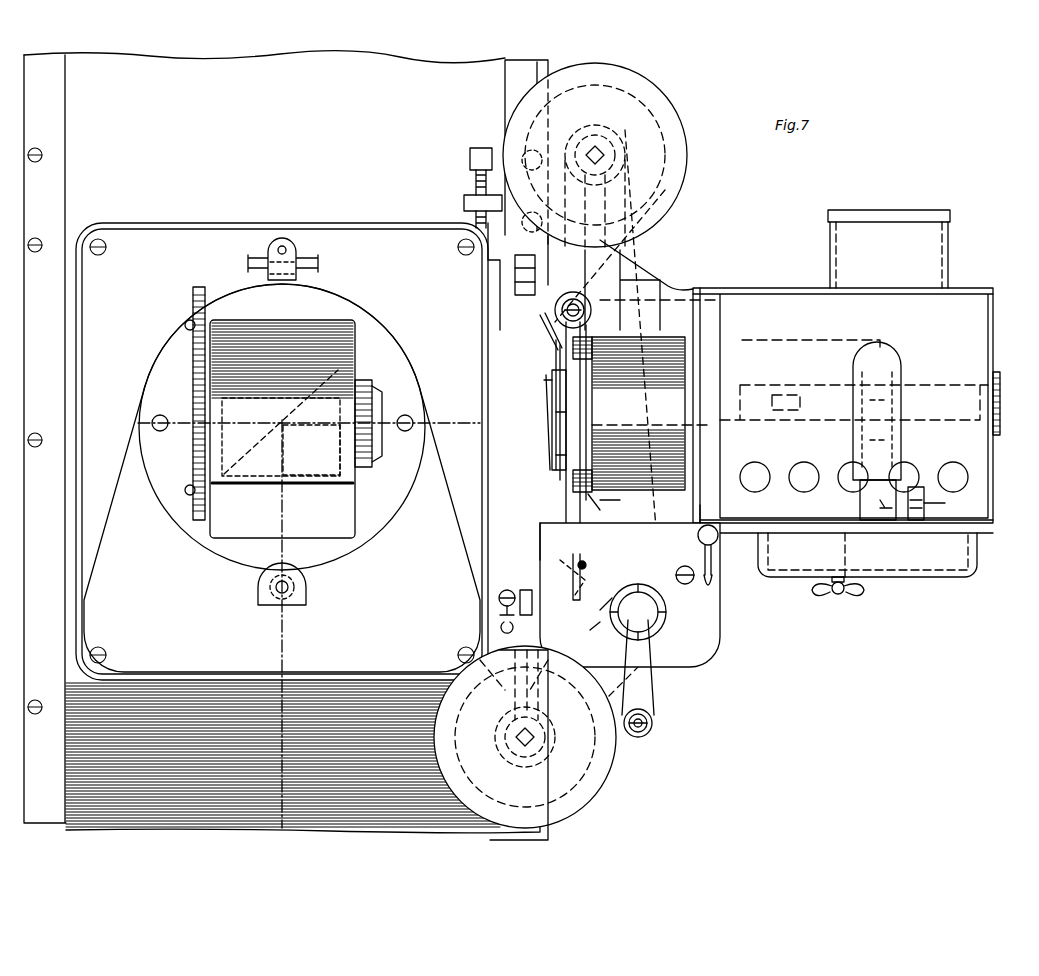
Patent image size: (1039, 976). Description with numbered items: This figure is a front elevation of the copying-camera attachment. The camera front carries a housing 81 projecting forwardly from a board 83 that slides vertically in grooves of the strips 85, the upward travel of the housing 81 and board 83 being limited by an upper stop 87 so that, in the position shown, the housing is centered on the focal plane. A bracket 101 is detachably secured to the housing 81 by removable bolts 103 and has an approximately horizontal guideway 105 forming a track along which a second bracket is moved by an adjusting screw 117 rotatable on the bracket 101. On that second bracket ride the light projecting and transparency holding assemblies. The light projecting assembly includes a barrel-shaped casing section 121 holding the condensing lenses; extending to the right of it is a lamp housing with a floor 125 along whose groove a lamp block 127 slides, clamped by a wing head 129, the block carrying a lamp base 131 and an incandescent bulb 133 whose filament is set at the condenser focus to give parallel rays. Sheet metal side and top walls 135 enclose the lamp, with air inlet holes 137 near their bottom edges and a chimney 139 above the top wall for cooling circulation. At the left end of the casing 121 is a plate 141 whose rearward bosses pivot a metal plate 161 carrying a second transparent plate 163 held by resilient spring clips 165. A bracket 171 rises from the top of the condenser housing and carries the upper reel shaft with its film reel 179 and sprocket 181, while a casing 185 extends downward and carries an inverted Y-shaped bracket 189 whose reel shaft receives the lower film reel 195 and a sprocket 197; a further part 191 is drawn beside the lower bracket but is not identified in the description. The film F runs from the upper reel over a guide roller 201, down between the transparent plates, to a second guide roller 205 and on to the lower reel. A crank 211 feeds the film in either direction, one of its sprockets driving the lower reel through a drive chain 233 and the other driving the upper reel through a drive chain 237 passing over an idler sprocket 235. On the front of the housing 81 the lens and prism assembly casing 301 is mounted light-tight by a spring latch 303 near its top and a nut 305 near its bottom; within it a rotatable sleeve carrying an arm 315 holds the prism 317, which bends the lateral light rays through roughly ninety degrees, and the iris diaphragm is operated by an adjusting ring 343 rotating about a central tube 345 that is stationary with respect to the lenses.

The housing 81 is at (195, 243).
The board 83 is at (291, 135).
The strips 85 is at (68, 200).
The upper stop 87 is at (466, 215).
The bracket 101 is at (548, 332).
The removable bolts 103 is at (515, 271).
The guideway 105 is at (546, 386).
The adjusting screw 117 is at (998, 378).
The casing section 121 is at (648, 390).
The floor 125 is at (885, 566).
The lamp block 127 is at (945, 578).
The wing head 129 is at (842, 598).
The lamp base 131 is at (876, 502).
The incandescent bulb 133 is at (900, 357).
The side and top walls 135 is at (758, 290).
The air inlet holes 137 is at (800, 466).
The chimney 139 is at (940, 256).
The plate 141 is at (594, 500).
The metal plate 161 is at (556, 348).
The second transparent plate 163 is at (552, 375).
The spring clips 165 is at (556, 400).
The bracket 171 is at (622, 268).
The film reel 179 is at (662, 103).
The sprocket 181 is at (616, 150).
The casing 185 is at (720, 620).
The Y-shaped bracket 189 is at (512, 682).
The guide roller 191 is at (499, 596).
The film reel 195 is at (616, 752).
The sprocket 197 is at (552, 730).
The guide roller 201 is at (555, 310).
The second guide roller 205 is at (589, 543).
The crank 211 is at (648, 700).
The drive chain 233 is at (590, 636).
The idler sprocket 235 is at (600, 592).
The drive chain 237 is at (628, 252).
The casing 301 is at (350, 505).
The spring latch 303 is at (300, 240).
The nut 305 is at (308, 580).
The arm 315 is at (200, 296).
The prism 317 is at (260, 437).
The adjusting ring 343 is at (362, 381).
The central tube 345 is at (380, 400).
The film F is at (576, 690).